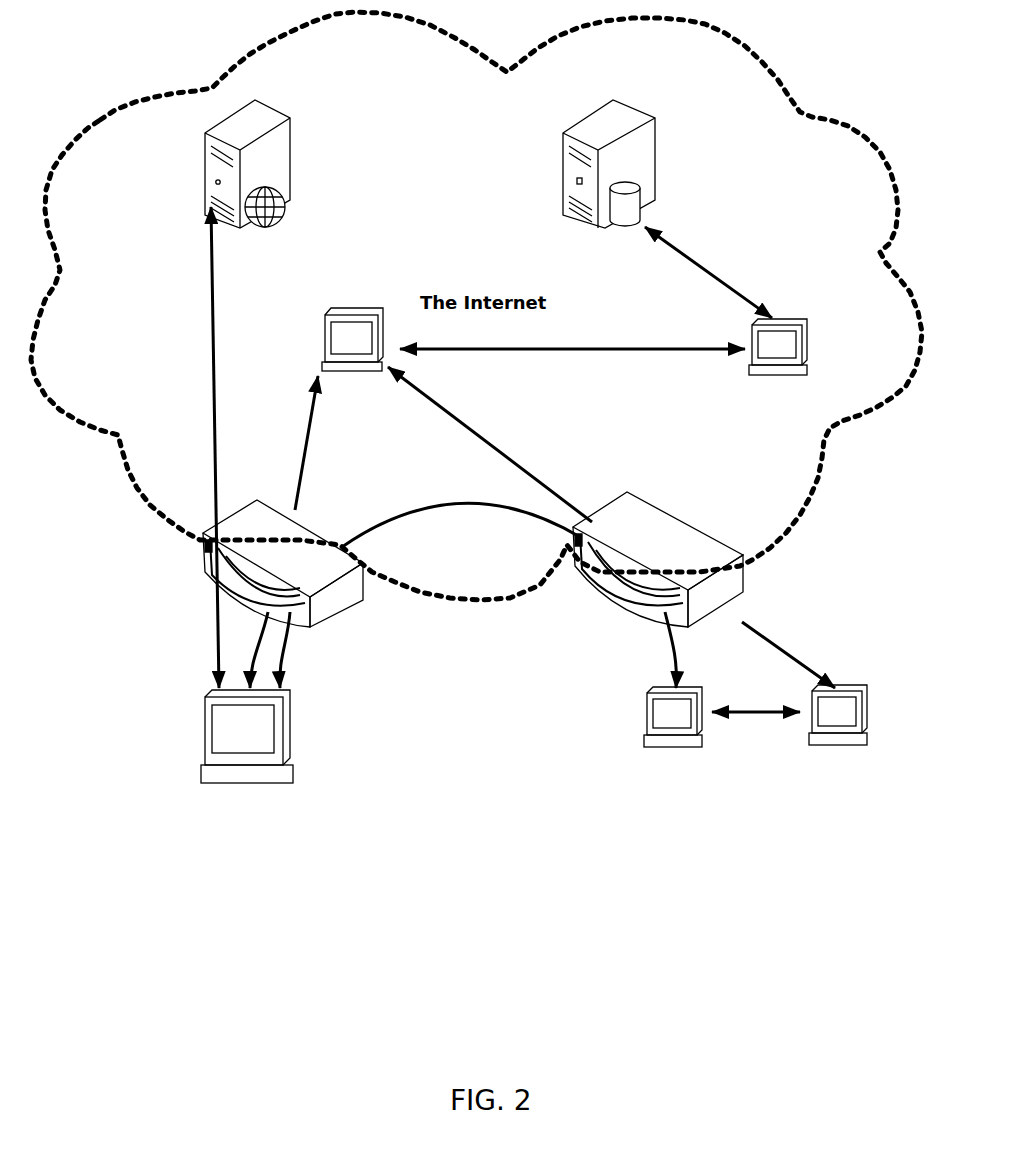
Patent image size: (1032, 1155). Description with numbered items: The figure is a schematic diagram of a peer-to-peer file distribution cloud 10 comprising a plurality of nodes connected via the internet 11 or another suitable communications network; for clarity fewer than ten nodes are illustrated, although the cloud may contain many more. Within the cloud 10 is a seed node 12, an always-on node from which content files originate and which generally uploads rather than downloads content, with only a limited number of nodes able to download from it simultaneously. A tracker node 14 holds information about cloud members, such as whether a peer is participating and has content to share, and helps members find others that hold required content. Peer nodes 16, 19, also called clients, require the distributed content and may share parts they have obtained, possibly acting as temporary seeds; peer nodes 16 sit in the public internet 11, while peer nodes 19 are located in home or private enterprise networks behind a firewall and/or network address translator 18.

The peer-to-peer file distribution cloud 10 is at (88, 470).
The internet 11 is at (93, 118).
The seed node 12 is at (203, 175).
The tracker node 14 is at (560, 162).
The peer node 16 is at (353, 312).
The network address translator 18 is at (305, 527).
The peer node 19 is at (295, 718).